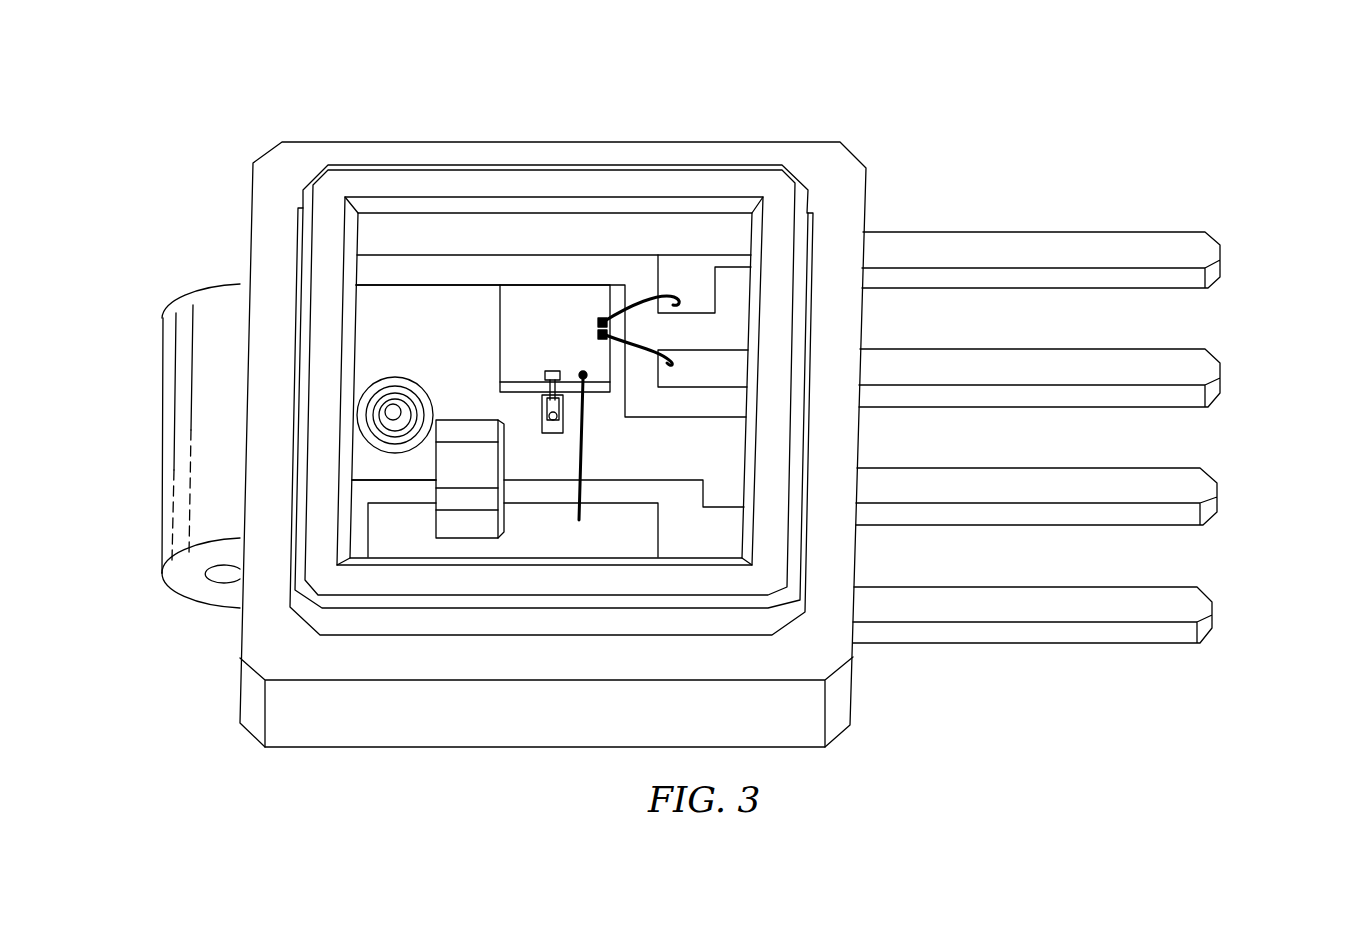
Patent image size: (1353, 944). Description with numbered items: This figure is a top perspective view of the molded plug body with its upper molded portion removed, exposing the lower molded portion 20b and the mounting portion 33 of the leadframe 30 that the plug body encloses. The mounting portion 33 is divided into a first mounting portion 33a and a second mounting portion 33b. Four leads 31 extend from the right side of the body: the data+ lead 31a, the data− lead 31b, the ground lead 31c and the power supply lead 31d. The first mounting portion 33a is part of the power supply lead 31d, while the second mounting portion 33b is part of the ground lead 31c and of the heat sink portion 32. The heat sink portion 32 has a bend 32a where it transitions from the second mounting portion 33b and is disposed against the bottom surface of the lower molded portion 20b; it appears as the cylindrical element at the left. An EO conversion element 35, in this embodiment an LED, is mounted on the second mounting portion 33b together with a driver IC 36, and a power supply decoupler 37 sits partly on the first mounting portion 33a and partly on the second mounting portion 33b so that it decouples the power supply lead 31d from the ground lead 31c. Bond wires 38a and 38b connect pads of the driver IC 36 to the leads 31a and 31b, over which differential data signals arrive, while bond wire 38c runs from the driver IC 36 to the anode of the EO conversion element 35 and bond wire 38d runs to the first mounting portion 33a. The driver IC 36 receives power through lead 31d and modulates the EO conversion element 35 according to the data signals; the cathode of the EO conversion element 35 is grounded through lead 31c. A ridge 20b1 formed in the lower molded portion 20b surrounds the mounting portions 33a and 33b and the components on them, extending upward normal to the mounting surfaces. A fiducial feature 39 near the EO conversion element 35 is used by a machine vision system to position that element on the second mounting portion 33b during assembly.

The lower molded portion 20b is at (843, 145).
The ridge 20b1 is at (413, 187).
The leadframe 30 is at (1034, 660).
The leads 31 is at (1082, 416).
The data+ lead 31a is at (1222, 248).
The data− lead 31b is at (1222, 364).
The ground lead 31c is at (1219, 488).
The power supply lead 31d is at (1214, 610).
The heat sink portion 32 is at (167, 457).
The bend 32a is at (168, 516).
The mounting portion 33 is at (551, 392).
The first mounting portion 33a is at (650, 535).
The second mounting portion 33b is at (440, 303).
The EO conversion element 35 is at (543, 401).
The driver IC 36 is at (565, 300).
The power supply decoupler 37 is at (502, 510).
The bond wire 38a is at (667, 293).
The bond wire 38b is at (658, 360).
The bond wire 38c is at (543, 388).
The bond wire 38d is at (578, 452).
The fiducial feature 39 is at (392, 383).